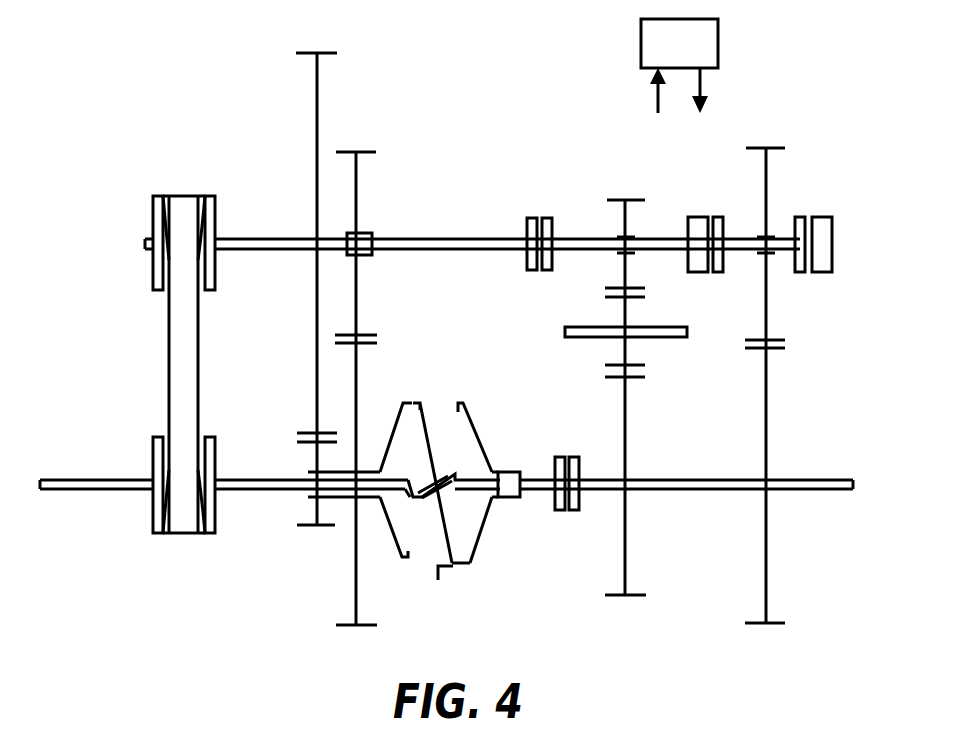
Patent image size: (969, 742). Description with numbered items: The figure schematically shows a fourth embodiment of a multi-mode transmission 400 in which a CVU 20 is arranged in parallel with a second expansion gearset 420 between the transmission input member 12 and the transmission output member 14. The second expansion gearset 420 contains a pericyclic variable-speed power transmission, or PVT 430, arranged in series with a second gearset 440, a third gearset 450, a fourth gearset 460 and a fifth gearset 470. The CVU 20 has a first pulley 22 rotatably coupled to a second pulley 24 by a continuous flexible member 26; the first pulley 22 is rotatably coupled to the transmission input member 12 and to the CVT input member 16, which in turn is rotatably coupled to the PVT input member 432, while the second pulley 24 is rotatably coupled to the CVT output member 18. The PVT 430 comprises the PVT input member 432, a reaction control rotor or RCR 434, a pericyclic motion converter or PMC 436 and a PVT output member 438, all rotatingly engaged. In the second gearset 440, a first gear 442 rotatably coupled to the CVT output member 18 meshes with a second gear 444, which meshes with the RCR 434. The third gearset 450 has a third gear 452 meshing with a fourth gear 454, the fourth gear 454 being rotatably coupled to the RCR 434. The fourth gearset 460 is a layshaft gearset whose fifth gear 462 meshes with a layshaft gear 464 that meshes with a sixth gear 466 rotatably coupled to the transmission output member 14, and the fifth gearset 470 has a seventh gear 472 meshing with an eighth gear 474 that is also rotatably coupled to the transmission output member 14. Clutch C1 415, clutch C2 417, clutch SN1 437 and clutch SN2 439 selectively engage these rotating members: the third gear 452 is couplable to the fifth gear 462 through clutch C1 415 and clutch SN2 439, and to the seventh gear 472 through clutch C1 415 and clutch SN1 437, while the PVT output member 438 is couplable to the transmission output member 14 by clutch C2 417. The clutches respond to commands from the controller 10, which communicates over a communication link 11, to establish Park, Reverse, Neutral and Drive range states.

The controller 10 is at (679, 66).
The communication link 11 is at (700, 82).
The transmission input member 12 is at (68, 480).
The transmission output member 14 is at (785, 480).
The CVT input member 16 is at (256, 492).
The CVT output member 18 is at (275, 238).
The CVU 20 is at (190, 182).
The first pulley 22 is at (153, 460).
The second pulley 24 is at (153, 268).
The continuous flexible member 26 is at (168, 372).
The multi-mode transmission 400 is at (162, 306).
The clutch C1 415 is at (525, 230).
The clutch C2 417 is at (572, 512).
The second expansion gearset 420 is at (482, 90).
The pericyclic variable-speed power transmission (PVT) 430 is at (407, 532).
The PVT input member 432 is at (343, 497).
The reaction control rotor (RCR) 434 is at (400, 540).
The pericyclic motion converter (PMC) 436 is at (440, 578).
The clutch SN1 437 is at (815, 215).
The PVT output member 438 is at (505, 500).
The clutch SN2 439 is at (705, 215).
The second gearset 440 is at (330, 90).
The first gear 442 is at (316, 375).
The second gear 444 is at (316, 462).
The third gearset 450 is at (368, 135).
The third gear 452 is at (358, 300).
The fourth gear 454 is at (358, 385).
The fourth gearset 460 is at (625, 185).
The fifth gear 462 is at (620, 228).
The layshaft gear 464 is at (622, 352).
The sixth gear 466 is at (622, 445).
The fifth gearset 470 is at (773, 130).
The seventh gear 472 is at (768, 290).
The eighth gear 474 is at (768, 392).